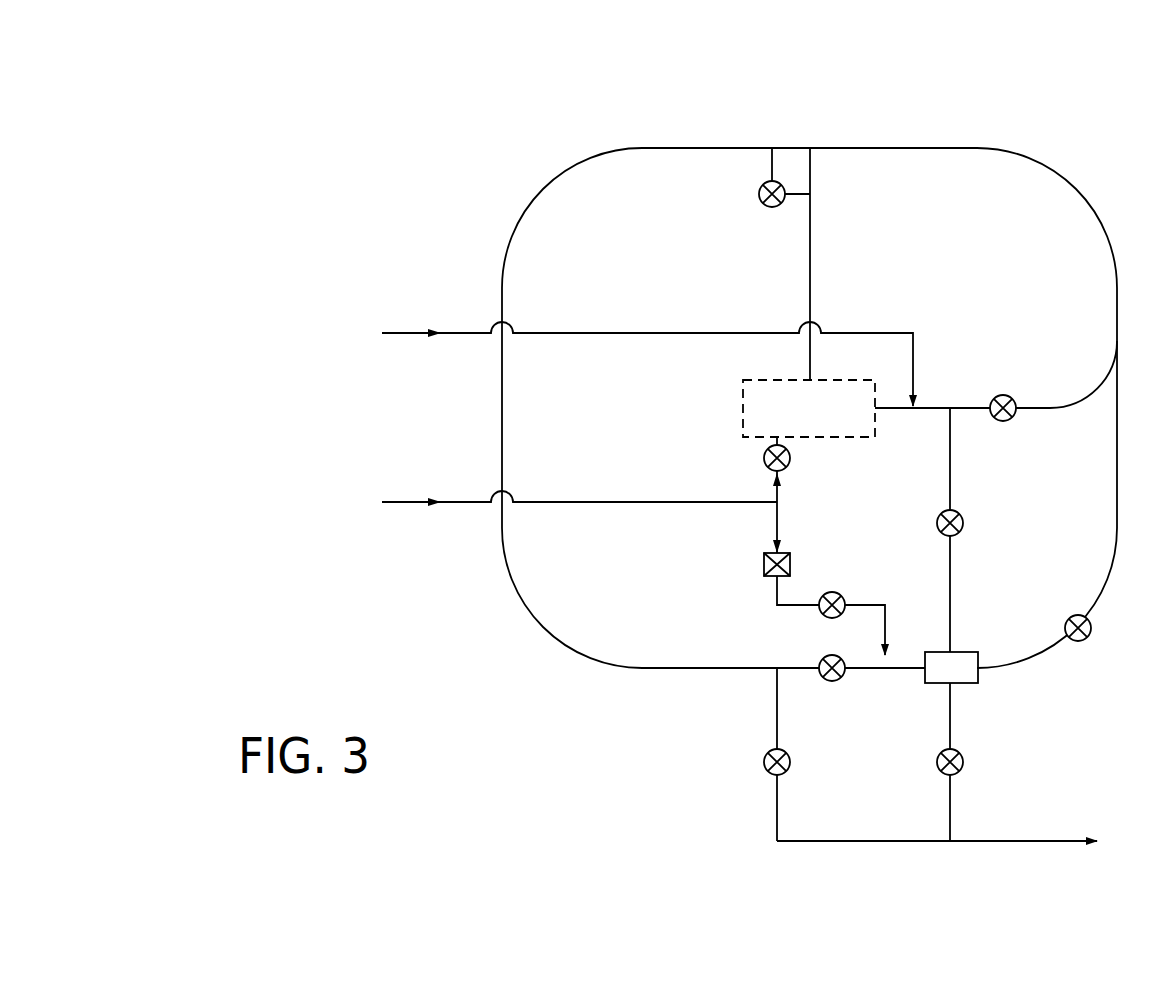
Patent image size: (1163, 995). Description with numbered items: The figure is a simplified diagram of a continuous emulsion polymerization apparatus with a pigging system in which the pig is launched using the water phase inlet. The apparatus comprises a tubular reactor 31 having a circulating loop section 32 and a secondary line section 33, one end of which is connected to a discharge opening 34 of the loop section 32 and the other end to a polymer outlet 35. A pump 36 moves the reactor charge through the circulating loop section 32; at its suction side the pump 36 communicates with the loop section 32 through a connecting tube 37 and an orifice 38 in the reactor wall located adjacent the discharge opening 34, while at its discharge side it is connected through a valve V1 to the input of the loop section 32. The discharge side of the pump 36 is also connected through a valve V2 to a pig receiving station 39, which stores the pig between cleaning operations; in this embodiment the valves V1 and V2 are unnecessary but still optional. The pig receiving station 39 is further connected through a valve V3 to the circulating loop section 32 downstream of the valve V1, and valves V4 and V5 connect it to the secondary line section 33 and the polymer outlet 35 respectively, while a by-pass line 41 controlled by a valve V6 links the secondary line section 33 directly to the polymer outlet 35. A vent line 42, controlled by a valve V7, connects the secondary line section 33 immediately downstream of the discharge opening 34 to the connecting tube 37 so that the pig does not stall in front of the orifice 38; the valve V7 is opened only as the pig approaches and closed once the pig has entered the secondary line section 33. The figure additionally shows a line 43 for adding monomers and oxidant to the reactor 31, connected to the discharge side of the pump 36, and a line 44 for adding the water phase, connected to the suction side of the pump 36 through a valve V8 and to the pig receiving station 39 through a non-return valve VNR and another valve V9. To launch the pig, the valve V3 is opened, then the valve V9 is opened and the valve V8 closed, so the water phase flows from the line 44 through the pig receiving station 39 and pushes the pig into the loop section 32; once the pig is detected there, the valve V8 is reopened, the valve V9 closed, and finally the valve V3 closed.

The tubular reactor 31 is at (438, 158).
The circulating loop section 32 is at (1066, 170).
The secondary line section 33 is at (570, 163).
The discharge opening 34 is at (815, 142).
The polymer outlet 35 is at (1025, 845).
The pump 36 is at (930, 389).
The connecting tube 37 is at (814, 290).
The orifice 38 is at (820, 153).
The pig receiving station 39 is at (968, 687).
The by-pass line 41 is at (773, 705).
The vent line 42 is at (795, 200).
The line for addition of monomers and oxidant 43 is at (632, 363).
The line for addition of water phase 44 is at (564, 503).
The valve V1 is at (1004, 428).
The valve V2 is at (968, 530).
The valve V3 is at (1095, 638).
The valve V4 is at (816, 657).
The valve V5 is at (967, 762).
The valve V6 is at (793, 768).
The valve V7 is at (758, 202).
The valve V8 is at (793, 495).
The valve V9 is at (852, 614).
The non-return valve VNR is at (763, 578).